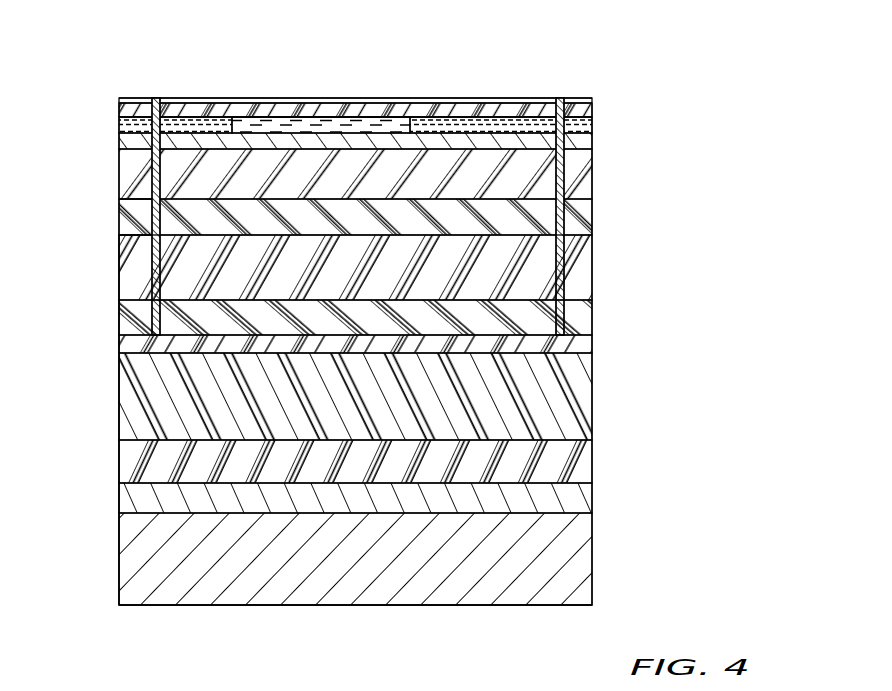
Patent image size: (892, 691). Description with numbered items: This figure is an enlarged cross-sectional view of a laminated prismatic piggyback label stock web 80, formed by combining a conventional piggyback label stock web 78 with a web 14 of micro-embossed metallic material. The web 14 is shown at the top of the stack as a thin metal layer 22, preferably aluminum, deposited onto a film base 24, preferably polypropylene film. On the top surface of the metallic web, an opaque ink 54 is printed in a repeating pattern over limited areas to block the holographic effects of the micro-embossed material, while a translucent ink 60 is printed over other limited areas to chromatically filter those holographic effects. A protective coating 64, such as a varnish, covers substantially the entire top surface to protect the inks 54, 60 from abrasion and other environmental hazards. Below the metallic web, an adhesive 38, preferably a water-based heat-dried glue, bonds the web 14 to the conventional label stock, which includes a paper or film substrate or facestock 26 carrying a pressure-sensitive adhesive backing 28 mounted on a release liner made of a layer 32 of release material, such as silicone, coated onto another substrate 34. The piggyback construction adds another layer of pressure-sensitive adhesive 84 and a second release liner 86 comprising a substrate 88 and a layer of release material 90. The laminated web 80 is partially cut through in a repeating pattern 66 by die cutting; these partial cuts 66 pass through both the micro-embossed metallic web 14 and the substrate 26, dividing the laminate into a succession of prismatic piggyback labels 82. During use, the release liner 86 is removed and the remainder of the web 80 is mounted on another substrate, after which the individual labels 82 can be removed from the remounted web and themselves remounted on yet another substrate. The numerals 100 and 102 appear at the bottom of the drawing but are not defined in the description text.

The laminated prismatic piggyback label stock web 80 is at (145, 82).
The protective coating 64 is at (237, 98).
The opaque ink 54 is at (593, 127).
The translucent ink 60 is at (322, 105).
The prismatic piggyback labels 82 is at (440, 98).
The thin metal layer 22 is at (590, 145).
The film base 24 is at (588, 185).
The web of micro-embossed metallic material 14 is at (115, 135).
The partial cuts in repeating pattern 66 is at (150, 108).
The adhesive 38 is at (118, 227).
The substrate (facestock) 26 is at (580, 270).
The pressure-sensitive adhesive backing 28 is at (585, 315).
The layer of release material 32 is at (593, 347).
The substrate 34 is at (585, 385).
The layer of pressure-sensitive adhesive 84 is at (585, 458).
The layer of release material 90 is at (583, 474).
The release liner 86 is at (602, 485).
The conventional piggyback label stock web 78 is at (112, 237).
The substrate 88 is at (305, 600).
The first region 100 is at (176, 680).
The second region 102 is at (501, 688).